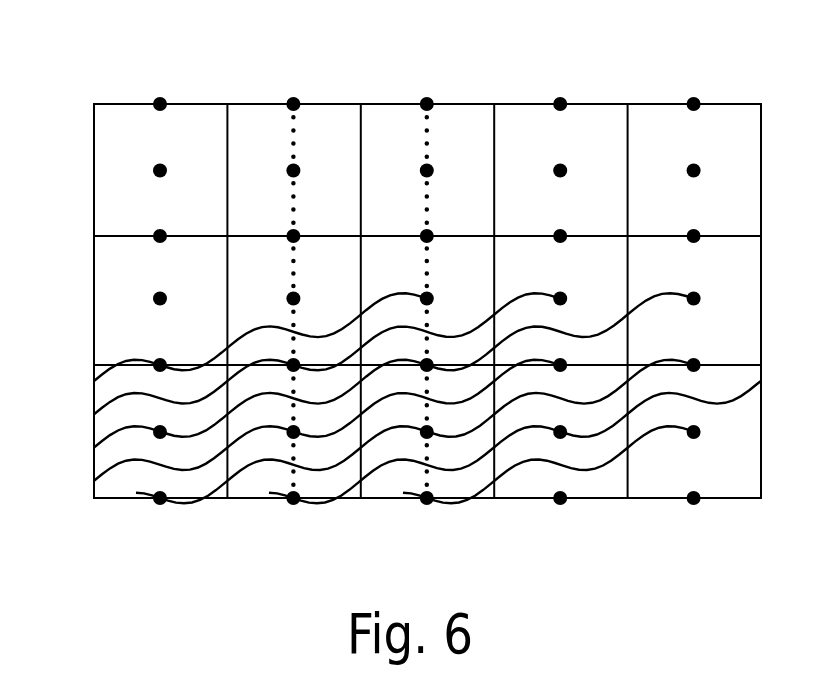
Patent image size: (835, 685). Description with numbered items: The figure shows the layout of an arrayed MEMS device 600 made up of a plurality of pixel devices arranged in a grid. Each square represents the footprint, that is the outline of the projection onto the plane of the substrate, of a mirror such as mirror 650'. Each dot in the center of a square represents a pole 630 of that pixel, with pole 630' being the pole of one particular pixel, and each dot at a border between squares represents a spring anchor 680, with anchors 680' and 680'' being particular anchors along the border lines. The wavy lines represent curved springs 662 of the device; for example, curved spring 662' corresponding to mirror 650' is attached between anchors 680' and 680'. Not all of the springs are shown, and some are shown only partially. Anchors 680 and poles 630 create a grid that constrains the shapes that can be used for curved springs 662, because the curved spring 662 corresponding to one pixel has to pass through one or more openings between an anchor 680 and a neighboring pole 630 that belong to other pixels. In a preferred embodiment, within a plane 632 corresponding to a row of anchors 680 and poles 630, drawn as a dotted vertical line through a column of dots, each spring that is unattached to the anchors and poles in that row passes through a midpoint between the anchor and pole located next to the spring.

The arrayed MEMS device 600 is at (58, 205).
The plane 632 is at (296, 87).
The spring anchor 680 is at (471, 134).
The pole 630 is at (451, 212).
The spring anchor 680' is at (455, 336).
The pole 630' is at (427, 420).
The spring anchor 680'' is at (395, 524).
The curved spring 662 is at (394, 365).
The curved spring 662' is at (415, 420).
The mirror 650' is at (515, 477).